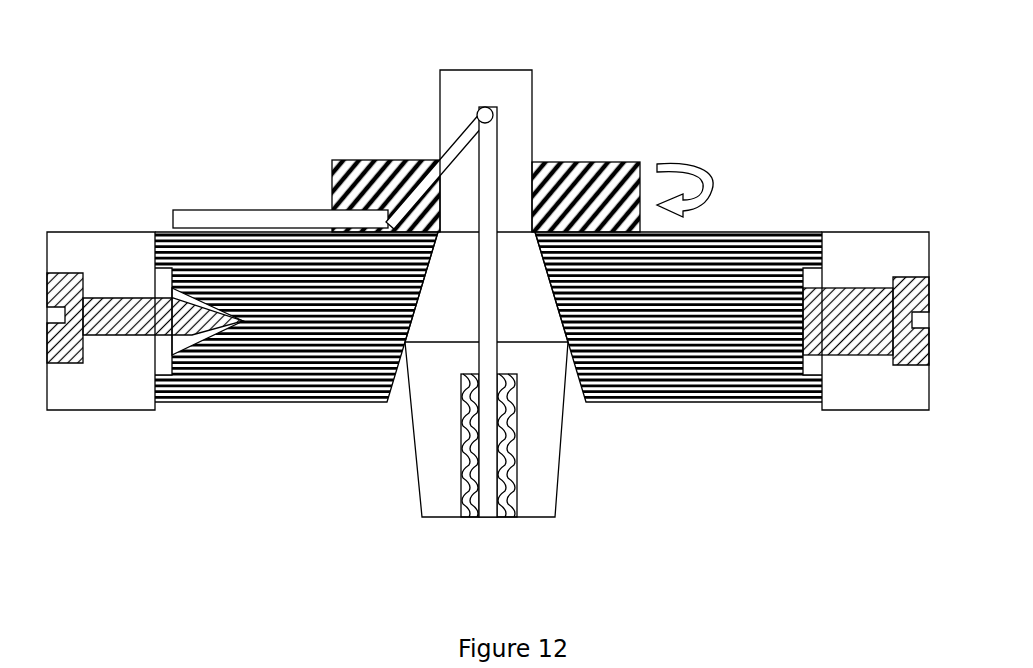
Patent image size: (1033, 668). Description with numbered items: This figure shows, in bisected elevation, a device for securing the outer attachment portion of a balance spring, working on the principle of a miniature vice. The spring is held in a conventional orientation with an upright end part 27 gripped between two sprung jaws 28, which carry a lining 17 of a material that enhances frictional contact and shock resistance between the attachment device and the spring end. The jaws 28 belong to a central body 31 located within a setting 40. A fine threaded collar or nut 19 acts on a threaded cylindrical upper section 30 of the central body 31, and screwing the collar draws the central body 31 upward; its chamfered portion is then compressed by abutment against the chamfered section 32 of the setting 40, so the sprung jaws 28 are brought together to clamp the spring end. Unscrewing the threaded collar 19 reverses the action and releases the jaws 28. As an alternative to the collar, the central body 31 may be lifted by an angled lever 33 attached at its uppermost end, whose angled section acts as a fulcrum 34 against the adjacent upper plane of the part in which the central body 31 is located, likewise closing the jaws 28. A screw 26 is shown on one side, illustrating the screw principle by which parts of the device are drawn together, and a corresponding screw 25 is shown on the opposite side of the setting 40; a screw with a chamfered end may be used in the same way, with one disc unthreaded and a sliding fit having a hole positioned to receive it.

The lining 17 is at (464, 501).
The threaded collar 19 is at (626, 176).
The adjusting screw 25 is at (860, 288).
The screw 26 is at (186, 323).
The upright end part 27 is at (490, 532).
The jaws 28 is at (522, 431).
The threaded cylindrical upper section 30 is at (520, 164).
The central body 31 is at (452, 295).
The chamfered section 32 is at (416, 287).
The angled lever 33 is at (258, 200).
The fulcrum 34 is at (383, 212).
The setting 40 is at (721, 387).